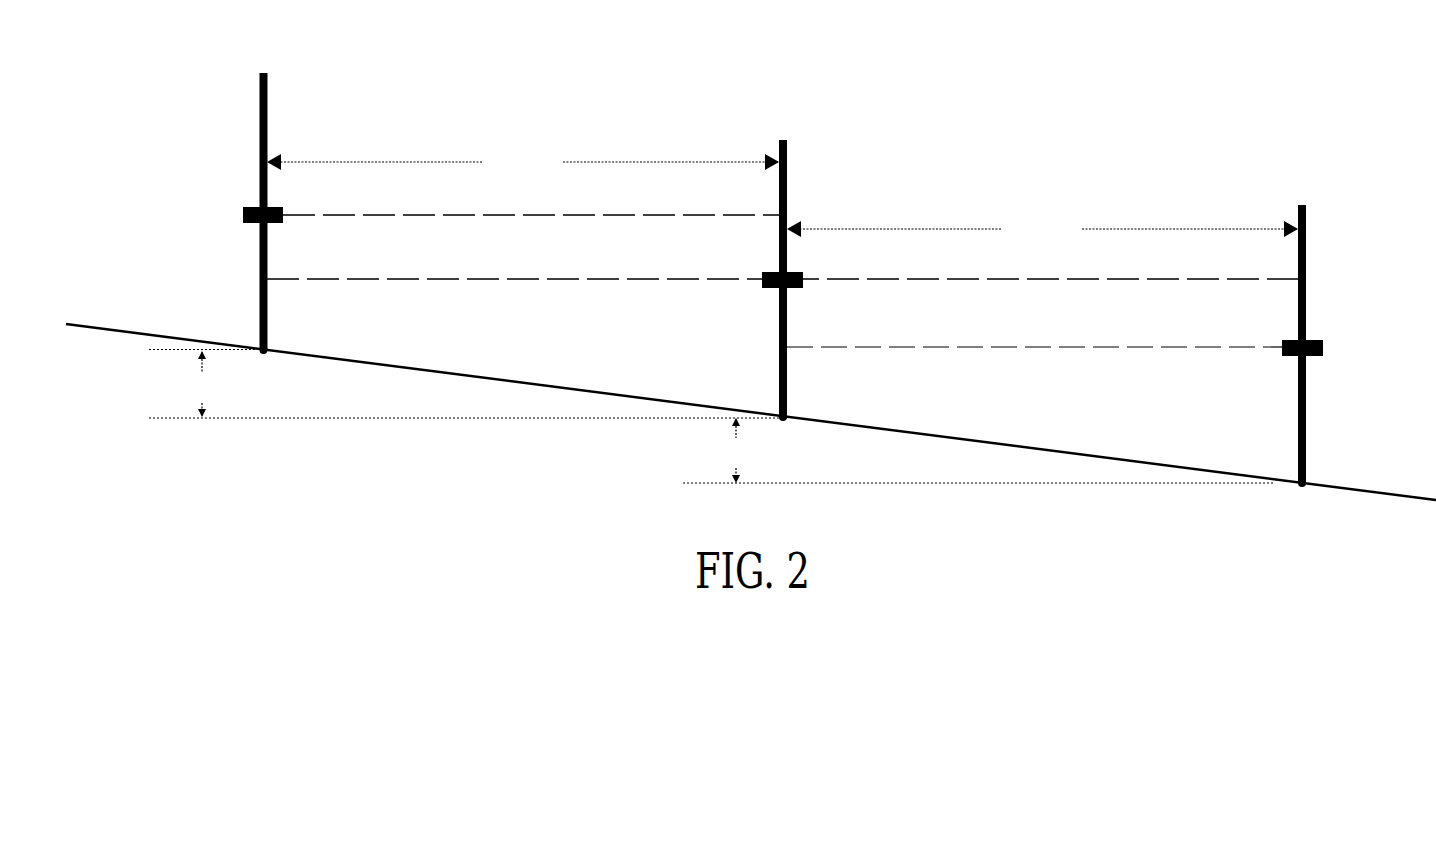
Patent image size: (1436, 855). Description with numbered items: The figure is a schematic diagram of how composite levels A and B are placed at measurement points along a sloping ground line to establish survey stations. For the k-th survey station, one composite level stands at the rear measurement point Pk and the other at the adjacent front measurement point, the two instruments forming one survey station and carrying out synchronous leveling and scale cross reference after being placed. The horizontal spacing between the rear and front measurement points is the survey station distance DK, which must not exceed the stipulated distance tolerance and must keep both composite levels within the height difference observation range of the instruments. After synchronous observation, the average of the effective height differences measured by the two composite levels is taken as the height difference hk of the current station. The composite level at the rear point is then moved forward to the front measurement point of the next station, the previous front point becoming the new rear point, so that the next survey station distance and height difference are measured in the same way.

The survey station distance DK is at (523, 158).
The height difference of the current survey station hk is at (464, 384).
The rear measurement point Pk is at (283, 334).